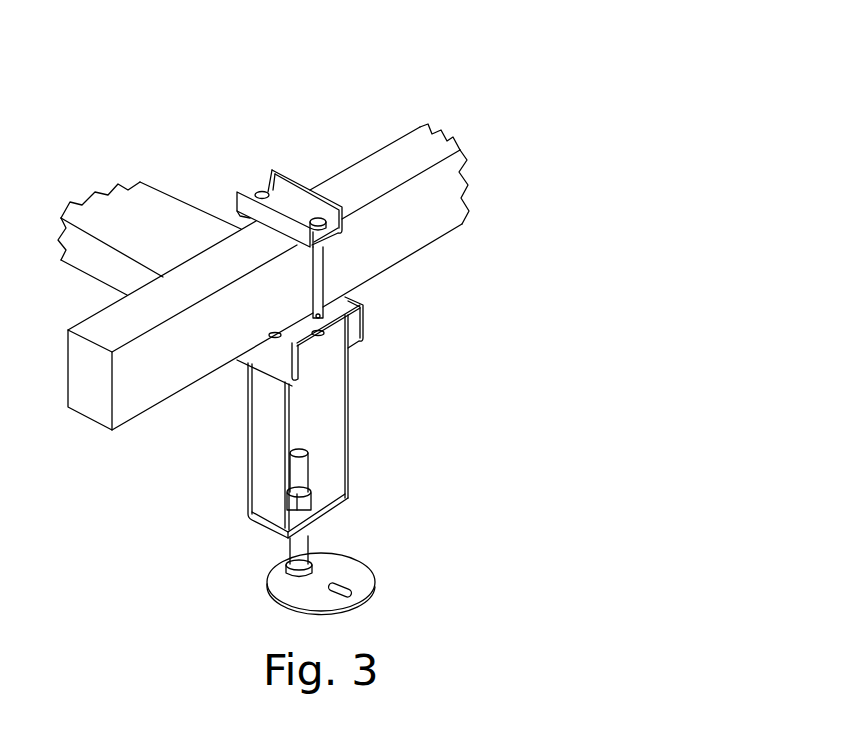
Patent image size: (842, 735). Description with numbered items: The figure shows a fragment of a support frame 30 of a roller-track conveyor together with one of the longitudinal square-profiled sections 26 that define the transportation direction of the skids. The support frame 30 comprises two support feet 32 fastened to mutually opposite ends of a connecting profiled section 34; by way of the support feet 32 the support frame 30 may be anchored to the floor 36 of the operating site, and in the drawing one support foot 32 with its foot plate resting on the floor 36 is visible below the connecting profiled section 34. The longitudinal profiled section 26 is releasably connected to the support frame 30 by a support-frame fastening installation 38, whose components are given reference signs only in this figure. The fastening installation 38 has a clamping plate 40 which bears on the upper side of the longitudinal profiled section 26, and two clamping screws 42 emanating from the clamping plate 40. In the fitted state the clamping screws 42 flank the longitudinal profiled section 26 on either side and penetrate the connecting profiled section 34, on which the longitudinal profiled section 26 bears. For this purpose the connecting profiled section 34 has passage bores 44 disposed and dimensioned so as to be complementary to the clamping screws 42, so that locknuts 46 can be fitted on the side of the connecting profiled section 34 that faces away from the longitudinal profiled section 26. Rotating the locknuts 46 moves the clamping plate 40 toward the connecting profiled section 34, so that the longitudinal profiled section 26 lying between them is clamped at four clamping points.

The longitudinal square-profiled section 26 is at (408, 150).
The support frame 30 is at (325, 319).
The support foot 32 is at (262, 462).
The connecting profiled section 34 is at (137, 203).
The floor 36 is at (478, 600).
The support-frame fastening installation 38 is at (335, 171).
The clamping plate 40 is at (302, 210).
The clamping screw 42 is at (268, 186).
The passage bore 44 is at (375, 353).
The locknut 46 is at (320, 336).